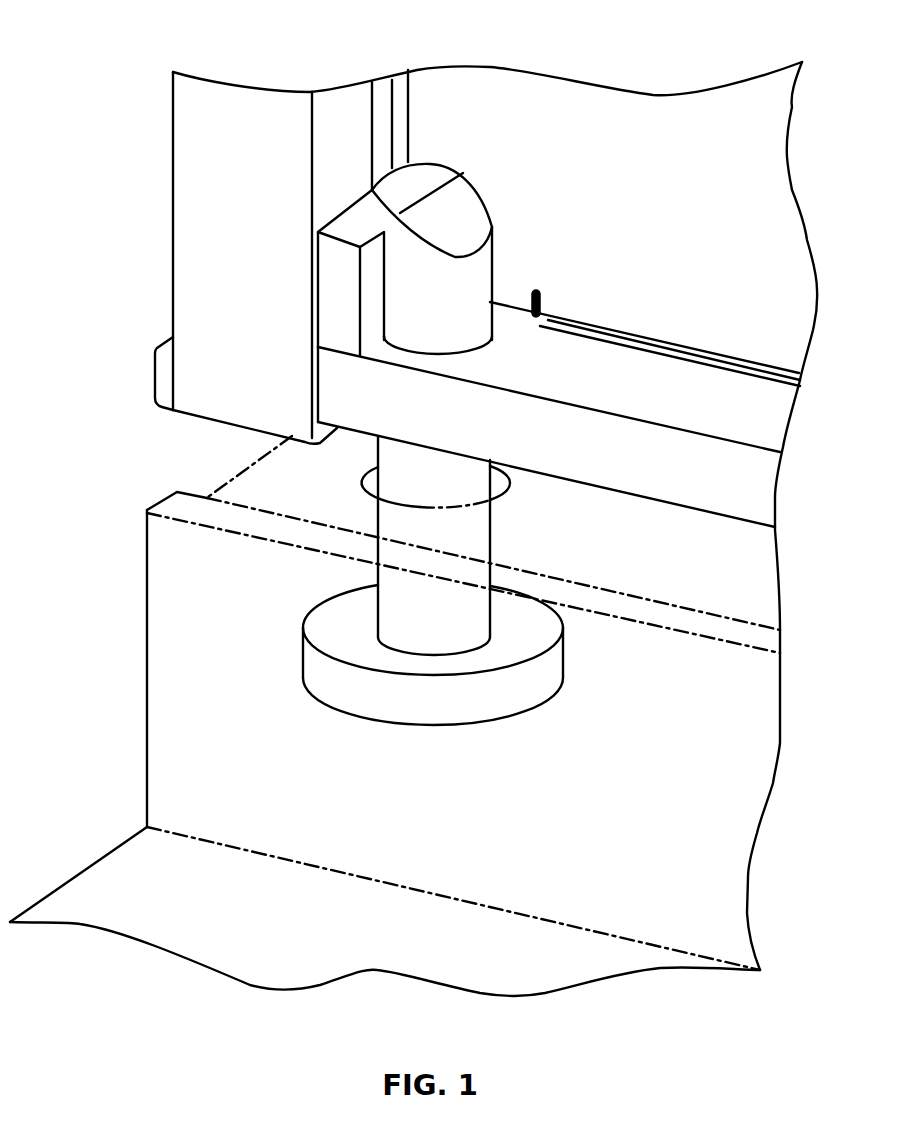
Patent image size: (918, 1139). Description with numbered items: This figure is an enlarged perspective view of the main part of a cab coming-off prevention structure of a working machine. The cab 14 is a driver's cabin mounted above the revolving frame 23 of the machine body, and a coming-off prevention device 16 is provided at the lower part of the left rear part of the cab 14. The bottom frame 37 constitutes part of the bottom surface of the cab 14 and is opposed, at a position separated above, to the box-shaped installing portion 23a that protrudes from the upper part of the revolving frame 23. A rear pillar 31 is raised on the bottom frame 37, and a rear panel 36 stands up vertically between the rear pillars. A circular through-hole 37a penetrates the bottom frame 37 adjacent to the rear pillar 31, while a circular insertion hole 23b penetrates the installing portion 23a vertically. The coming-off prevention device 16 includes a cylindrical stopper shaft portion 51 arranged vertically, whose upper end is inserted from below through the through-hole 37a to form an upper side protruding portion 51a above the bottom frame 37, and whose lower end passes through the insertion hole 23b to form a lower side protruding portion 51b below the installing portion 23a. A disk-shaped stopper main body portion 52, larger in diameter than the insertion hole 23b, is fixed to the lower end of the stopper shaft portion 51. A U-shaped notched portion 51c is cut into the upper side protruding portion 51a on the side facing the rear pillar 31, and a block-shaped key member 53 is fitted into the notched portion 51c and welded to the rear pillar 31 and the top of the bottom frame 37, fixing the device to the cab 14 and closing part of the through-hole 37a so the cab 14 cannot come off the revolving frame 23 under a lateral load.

The cab 14 is at (762, 197).
The coming-off prevention device 16 is at (465, 114).
The revolving frame 23 is at (80, 873).
The installing portion 23a is at (147, 666).
The insertion hole 23b is at (362, 484).
The rear pillar 31 is at (202, 203).
The rear panel 36 is at (790, 337).
The bottom frame 37 is at (775, 412).
The through-hole 37a is at (470, 345).
The stopper shaft portion 51 is at (463, 180).
The upper side protruding portion 51a is at (480, 270).
The lower side protruding portion 51b is at (490, 537).
The notched portion 51c is at (387, 322).
The stopper main body portion 52 is at (497, 717).
The key member 53 is at (312, 288).